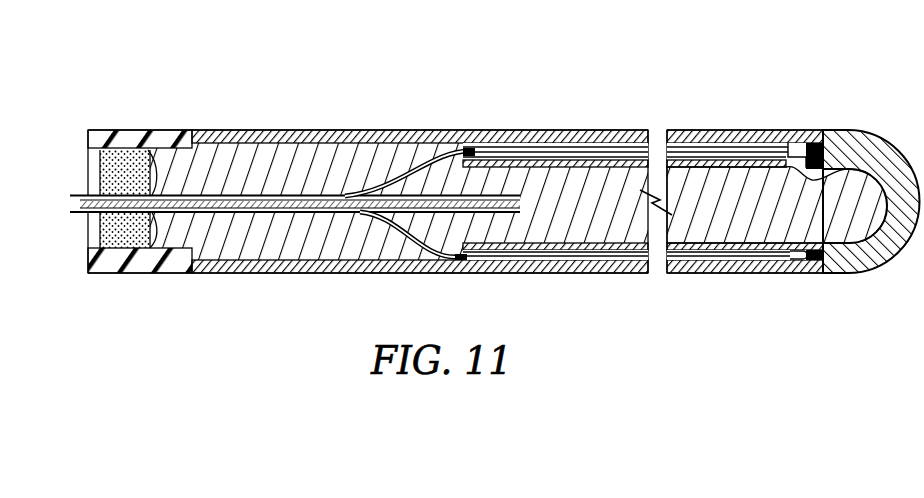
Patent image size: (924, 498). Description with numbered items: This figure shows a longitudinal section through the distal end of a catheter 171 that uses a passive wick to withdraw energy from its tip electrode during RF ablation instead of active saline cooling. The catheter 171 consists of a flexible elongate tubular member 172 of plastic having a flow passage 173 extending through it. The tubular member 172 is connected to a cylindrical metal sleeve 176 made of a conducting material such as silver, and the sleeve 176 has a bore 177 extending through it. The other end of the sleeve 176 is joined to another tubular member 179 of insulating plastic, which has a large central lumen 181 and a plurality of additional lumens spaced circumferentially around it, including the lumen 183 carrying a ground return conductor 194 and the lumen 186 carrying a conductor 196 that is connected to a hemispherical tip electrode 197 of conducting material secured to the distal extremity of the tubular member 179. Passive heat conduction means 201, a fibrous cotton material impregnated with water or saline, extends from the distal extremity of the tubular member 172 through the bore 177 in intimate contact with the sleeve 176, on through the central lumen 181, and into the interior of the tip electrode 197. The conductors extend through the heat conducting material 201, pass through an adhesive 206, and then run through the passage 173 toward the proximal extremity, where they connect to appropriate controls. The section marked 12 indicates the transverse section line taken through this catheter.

The catheter 171 is at (297, 110).
The flow passage 173 is at (92, 158).
The flexible elongate tubular member 172 is at (118, 147).
The conductor 196 is at (152, 180).
The bore 177 is at (372, 147).
The cylindrical metal sleeve 176 is at (423, 148).
The large central lumen 181 is at (476, 160).
The tubular member 179 is at (541, 146).
The section line 12- 12 is at (572, 200).
The lumen 186 is at (694, 148).
The hemispherical tip electrode 197 is at (892, 147).
The adhesive 206 is at (100, 240).
The ground return conductor 194 is at (130, 250).
The passive heat conduction means 201 is at (290, 258).
The lumen 183 is at (680, 273).